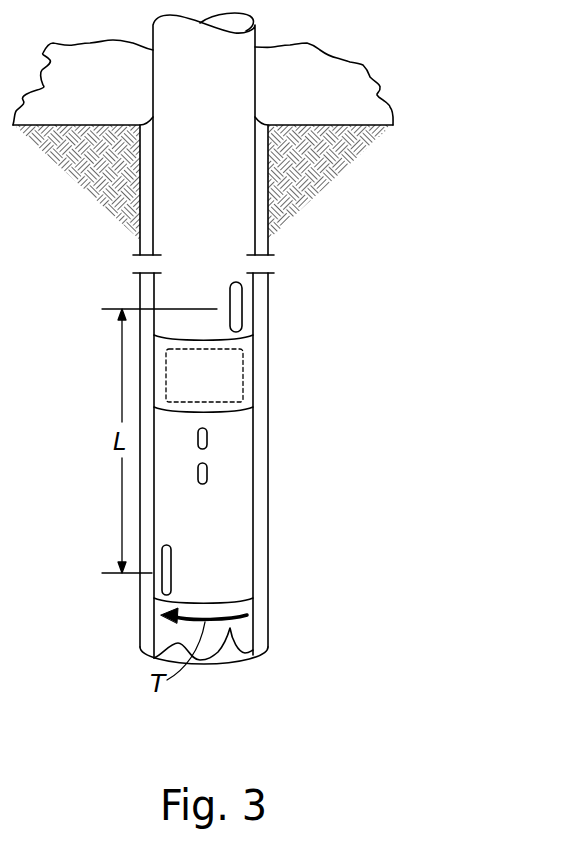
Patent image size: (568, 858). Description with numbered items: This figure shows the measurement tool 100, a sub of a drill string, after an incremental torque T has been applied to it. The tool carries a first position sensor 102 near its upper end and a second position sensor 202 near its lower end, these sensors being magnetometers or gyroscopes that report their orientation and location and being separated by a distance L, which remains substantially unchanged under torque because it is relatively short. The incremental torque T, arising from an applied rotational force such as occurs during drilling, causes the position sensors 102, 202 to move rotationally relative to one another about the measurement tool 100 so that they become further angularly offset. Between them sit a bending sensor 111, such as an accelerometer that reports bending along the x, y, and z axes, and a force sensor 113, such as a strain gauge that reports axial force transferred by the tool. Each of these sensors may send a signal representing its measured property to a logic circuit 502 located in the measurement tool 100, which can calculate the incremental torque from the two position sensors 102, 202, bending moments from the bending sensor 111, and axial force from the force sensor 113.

The measurement tool 100 is at (107, 440).
The first position sensor 102 is at (242, 310).
The logic circuit 502 is at (243, 383).
The bending sensor 111 is at (207, 440).
The force sensor 113 is at (207, 473).
The second position sensor 202 is at (171, 575).